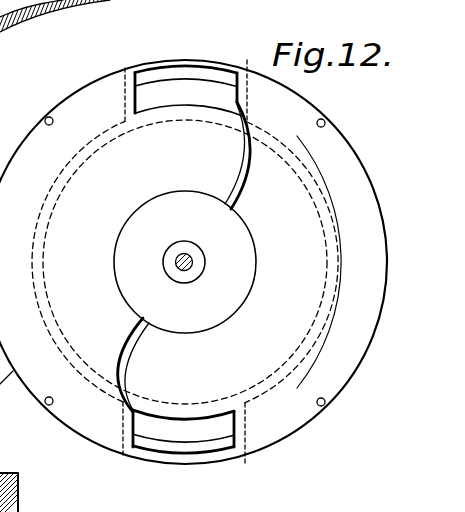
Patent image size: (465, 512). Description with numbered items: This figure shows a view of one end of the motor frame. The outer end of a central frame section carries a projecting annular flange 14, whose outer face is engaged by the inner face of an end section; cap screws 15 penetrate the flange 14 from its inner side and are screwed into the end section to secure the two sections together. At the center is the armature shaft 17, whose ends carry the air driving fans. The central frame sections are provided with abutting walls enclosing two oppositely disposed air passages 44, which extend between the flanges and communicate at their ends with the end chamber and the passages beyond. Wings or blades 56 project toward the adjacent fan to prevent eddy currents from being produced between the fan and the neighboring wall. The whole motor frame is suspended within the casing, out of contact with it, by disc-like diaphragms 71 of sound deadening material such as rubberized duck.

The disc-like diaphragm 71 is at (330, 163).
The air passages 44 is at (192, 92).
The wings or blades 56 is at (250, 178).
The armature shaft 17 is at (193, 263).
The cap screws 15 is at (324, 405).
The projecting annular flange 14 is at (18, 494).